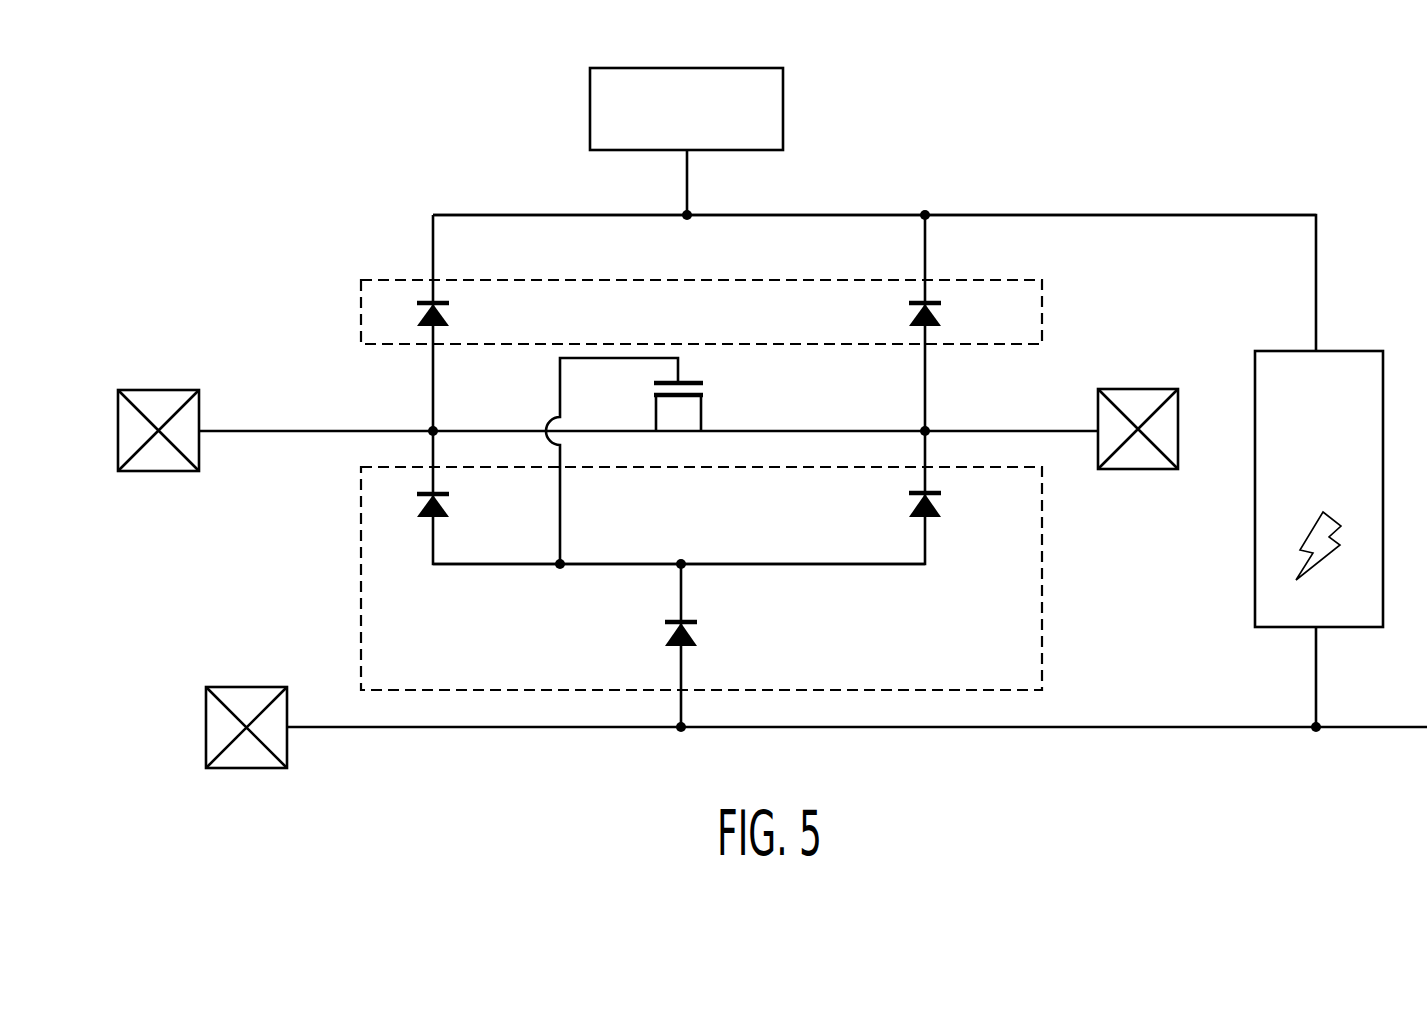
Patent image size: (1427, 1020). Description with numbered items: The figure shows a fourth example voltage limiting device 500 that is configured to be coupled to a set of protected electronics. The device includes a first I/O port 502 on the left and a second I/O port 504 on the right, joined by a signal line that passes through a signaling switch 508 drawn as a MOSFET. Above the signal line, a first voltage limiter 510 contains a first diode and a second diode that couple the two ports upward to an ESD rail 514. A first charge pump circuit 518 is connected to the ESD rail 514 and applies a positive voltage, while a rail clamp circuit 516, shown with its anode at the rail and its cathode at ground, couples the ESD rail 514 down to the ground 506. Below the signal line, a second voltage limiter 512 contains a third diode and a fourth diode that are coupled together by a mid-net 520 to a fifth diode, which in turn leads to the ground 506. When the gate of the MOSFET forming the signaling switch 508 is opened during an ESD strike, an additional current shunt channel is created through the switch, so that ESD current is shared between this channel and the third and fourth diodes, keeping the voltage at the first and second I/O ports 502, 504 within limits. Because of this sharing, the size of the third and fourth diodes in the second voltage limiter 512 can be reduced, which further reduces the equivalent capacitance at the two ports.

The voltage limiting device 500 is at (208, 166).
The first I/O port 502 is at (158, 472).
The second I/O port 504 is at (1135, 469).
The ground 506 is at (206, 722).
The signaling switch 508 is at (703, 417).
The first voltage limiter 510 is at (548, 280).
The second voltage limiter 512 is at (361, 557).
The ESD rail 514 is at (1015, 215).
The rail clamp circuit 516 is at (1254, 583).
The first charge pump circuit 518 is at (783, 105).
The mid-net 520 is at (727, 563).